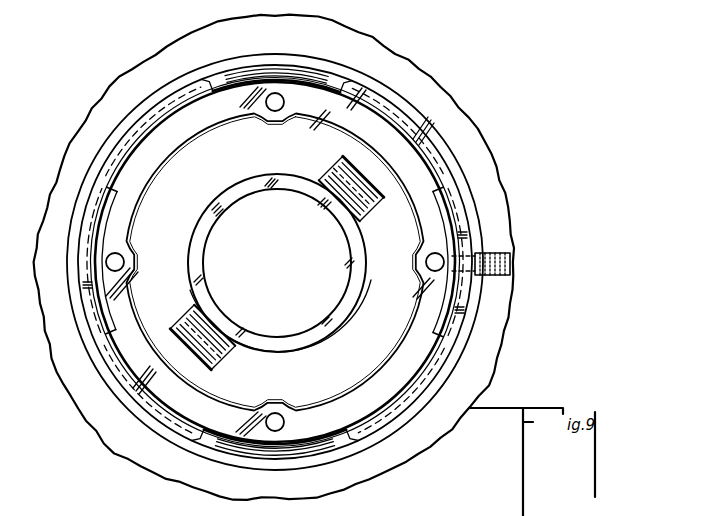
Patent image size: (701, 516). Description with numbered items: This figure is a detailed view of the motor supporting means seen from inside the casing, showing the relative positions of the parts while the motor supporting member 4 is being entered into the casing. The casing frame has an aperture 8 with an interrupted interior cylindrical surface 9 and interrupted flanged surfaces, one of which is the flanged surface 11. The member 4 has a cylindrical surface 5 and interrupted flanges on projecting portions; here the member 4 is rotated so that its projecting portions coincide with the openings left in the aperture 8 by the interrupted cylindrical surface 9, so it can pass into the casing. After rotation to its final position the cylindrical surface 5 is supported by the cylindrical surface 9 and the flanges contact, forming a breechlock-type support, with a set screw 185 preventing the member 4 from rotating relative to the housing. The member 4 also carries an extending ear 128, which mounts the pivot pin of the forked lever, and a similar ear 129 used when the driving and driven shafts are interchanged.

The motor supporting member 4 is at (157, 200).
The cylindrical surface 5 is at (103, 333).
The aperture 8 is at (82, 143).
The interrupted interior cylindrical surface 9 is at (90, 290).
The interrupted flanged surface 11 is at (83, 259).
The extending ear 128 is at (220, 358).
The ear 129 is at (320, 167).
The set screw 185 is at (493, 253).